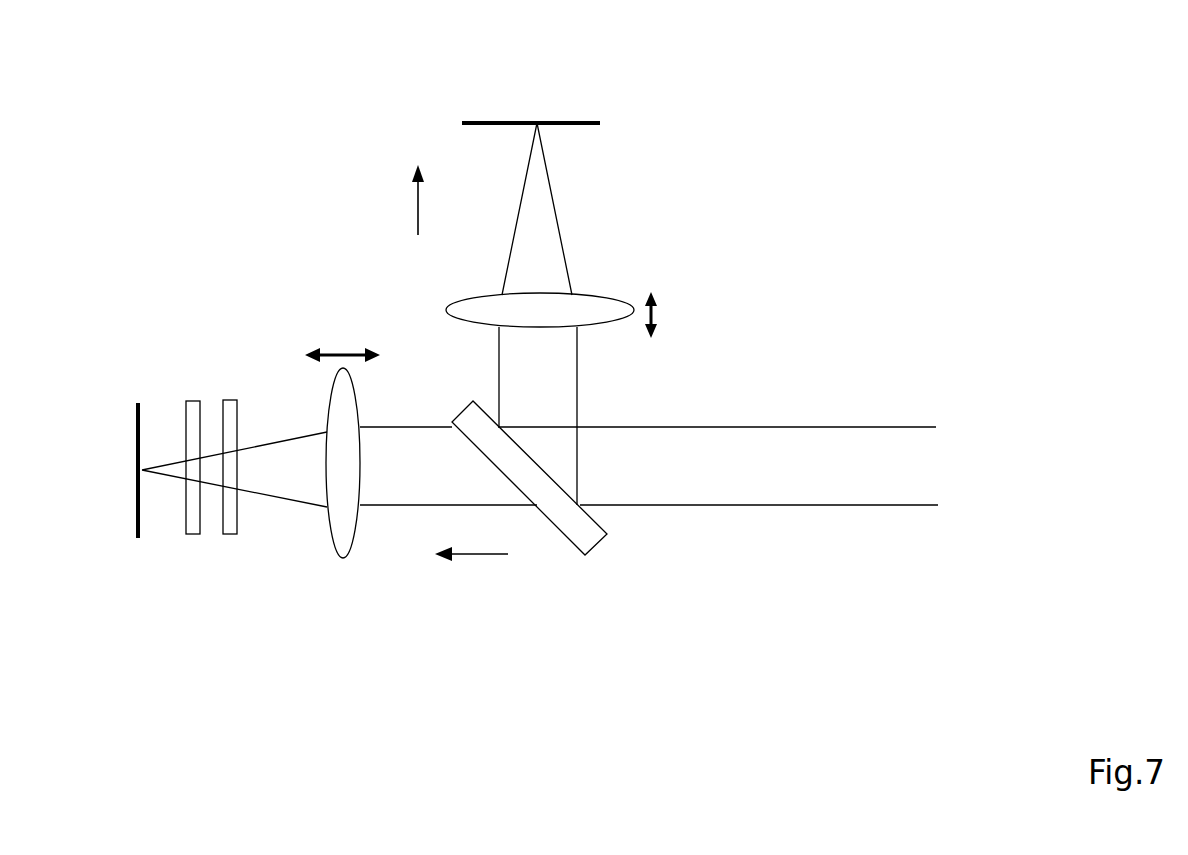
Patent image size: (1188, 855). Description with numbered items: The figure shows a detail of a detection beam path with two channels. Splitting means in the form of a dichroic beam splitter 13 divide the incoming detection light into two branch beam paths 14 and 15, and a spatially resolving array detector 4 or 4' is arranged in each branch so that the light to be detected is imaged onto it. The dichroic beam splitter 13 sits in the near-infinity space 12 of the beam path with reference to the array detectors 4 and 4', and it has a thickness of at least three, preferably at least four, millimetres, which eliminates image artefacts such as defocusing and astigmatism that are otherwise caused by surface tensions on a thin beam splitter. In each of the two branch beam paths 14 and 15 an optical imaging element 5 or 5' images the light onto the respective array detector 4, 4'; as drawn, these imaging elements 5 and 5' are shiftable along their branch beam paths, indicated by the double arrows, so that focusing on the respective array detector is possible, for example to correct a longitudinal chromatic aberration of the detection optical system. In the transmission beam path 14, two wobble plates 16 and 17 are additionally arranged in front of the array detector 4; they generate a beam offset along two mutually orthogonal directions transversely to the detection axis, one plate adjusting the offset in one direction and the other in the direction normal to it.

The spatially resolving array detector 4 is at (114, 410).
The spatially resolving array detector 4' is at (531, 160).
The optical imaging element 5 is at (342, 505).
The optical imaging element 5' is at (557, 262).
The near-infinity space 12 is at (772, 498).
The dichroic beam splitter 13 is at (590, 535).
The branch beam path 14 is at (471, 572).
The branch beam path 15 is at (402, 200).
The wobble plate 16 is at (193, 535).
The wobble plate 17 is at (232, 408).